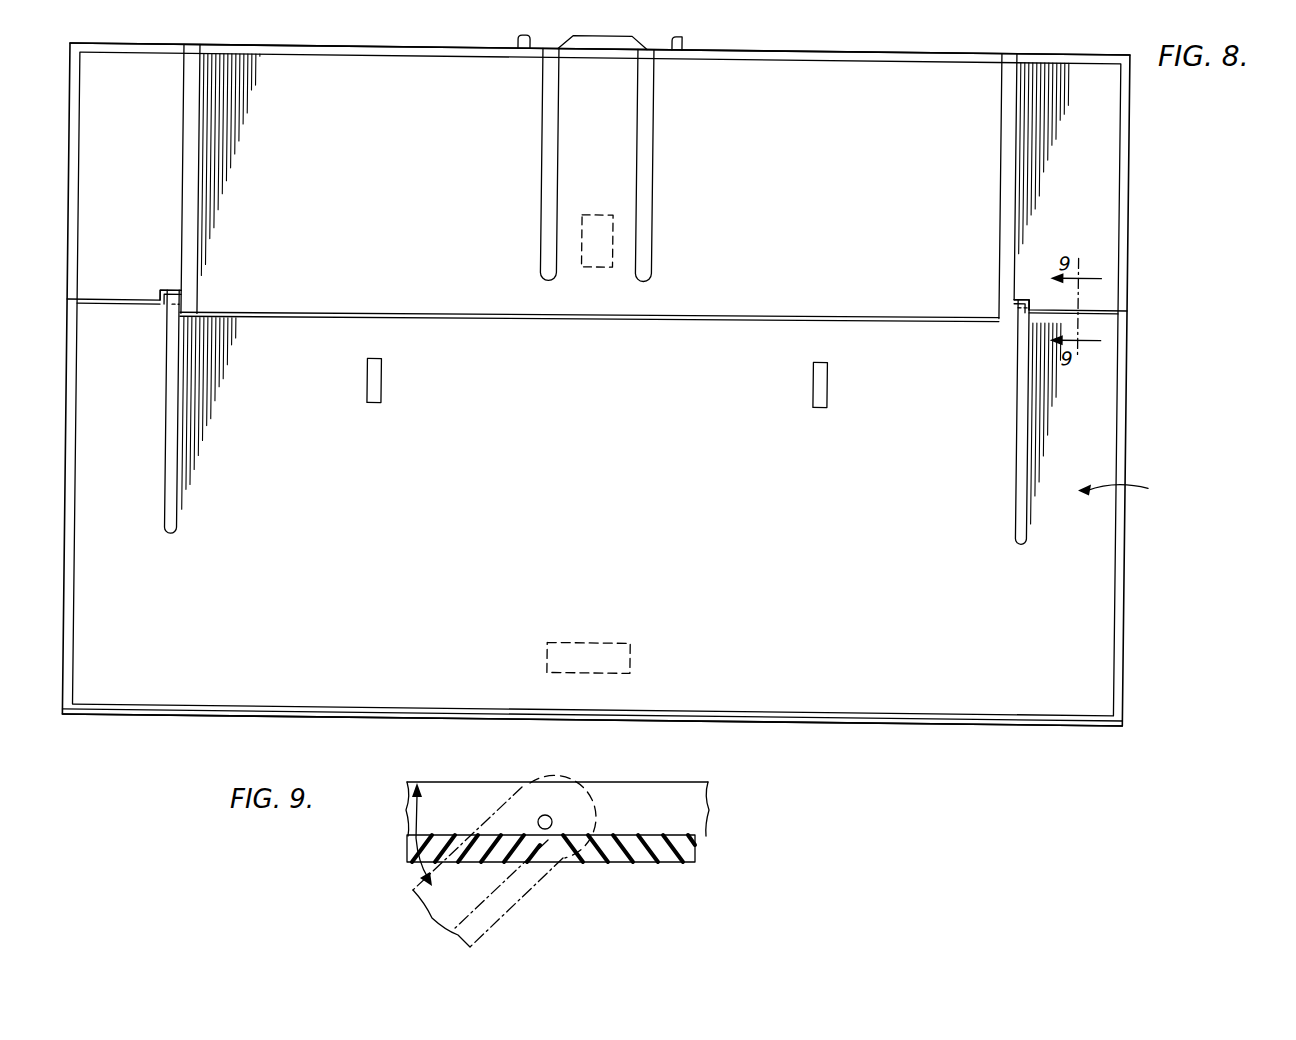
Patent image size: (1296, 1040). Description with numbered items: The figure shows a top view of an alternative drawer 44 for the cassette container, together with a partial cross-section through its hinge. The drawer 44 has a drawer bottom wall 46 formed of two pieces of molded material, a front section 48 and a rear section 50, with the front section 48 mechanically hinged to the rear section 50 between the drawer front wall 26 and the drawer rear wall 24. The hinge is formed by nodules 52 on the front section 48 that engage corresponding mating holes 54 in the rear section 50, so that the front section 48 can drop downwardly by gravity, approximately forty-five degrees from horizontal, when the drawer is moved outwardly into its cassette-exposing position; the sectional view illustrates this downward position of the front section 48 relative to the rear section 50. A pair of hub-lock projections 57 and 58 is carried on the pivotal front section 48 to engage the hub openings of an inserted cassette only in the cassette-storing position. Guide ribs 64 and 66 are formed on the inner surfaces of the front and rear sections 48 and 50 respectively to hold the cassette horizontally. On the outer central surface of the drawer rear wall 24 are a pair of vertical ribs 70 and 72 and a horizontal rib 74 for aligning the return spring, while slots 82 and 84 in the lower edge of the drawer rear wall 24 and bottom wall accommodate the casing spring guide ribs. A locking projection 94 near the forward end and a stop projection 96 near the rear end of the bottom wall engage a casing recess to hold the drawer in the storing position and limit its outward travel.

In FIG. 8, the drawer rear wall 24 is at (882, 43).
In FIG. 8, the drawer front wall 26 is at (801, 706).
In FIG. 8, the drawer 44 is at (1140, 383).
In FIG. 8, the drawer bottom wall 46 is at (1126, 492).
In FIG. 8, the front section 48 is at (1090, 617).
In FIG. 9, the front section 48 is at (406, 852).
In FIG. 8, the rear section 50 is at (1102, 221).
In FIG. 9, the rear section 50 is at (633, 852).
In FIG. 8, the nodules 52 is at (190, 302).
In FIG. 9, the nodules 52 is at (551, 818).
In FIG. 8, the mating holes 54 is at (177, 286).
In FIG. 9, the mating holes 54 is at (541, 814).
In FIG. 8, the hub-lock projection 57 is at (829, 379).
In FIG. 8, the hub-lock projection 58 is at (382, 377).
In FIG. 8, the guide rib 64 is at (188, 489).
In FIG. 8, the guide rib 66 is at (194, 215).
In FIG. 8, the vertical rib 70 is at (680, 32).
In FIG. 8, the vertical rib 72 is at (517, 34).
In FIG. 8, the horizontal rib 74 is at (606, 37).
In FIG. 8, the slot 82 is at (650, 207).
In FIG. 8, the slot 84 is at (552, 190).
In FIG. 8, the locking projection 94 is at (597, 644).
In FIG. 8, the stop projection 96 is at (596, 252).